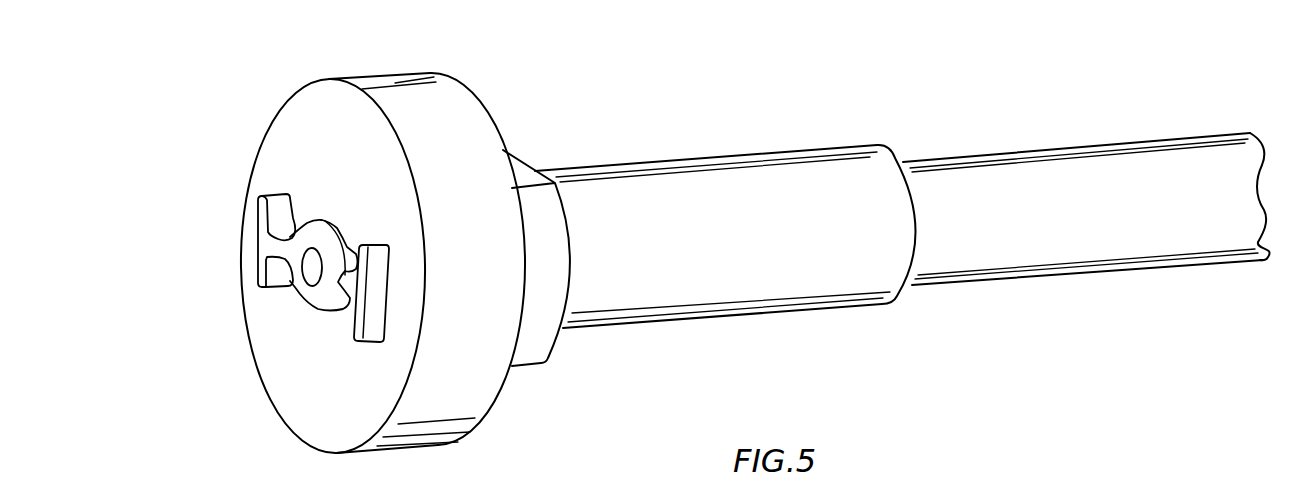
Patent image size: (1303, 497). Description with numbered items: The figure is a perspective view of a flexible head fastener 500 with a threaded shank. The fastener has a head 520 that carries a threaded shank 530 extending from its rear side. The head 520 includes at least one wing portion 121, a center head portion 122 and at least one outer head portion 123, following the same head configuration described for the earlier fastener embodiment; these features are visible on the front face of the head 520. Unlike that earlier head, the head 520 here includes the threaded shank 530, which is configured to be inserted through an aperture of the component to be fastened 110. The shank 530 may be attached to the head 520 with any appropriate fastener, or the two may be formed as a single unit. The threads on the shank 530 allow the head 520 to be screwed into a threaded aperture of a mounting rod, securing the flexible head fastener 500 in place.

The flexible head fastener 500 is at (908, 72).
The component to be fastened 110 is at (298, 107).
The head 520 is at (277, 245).
The wing portion 121 is at (344, 280).
The center head portion 122 is at (308, 295).
The outer head portion 123 is at (360, 297).
The threaded shank 530 is at (695, 177).